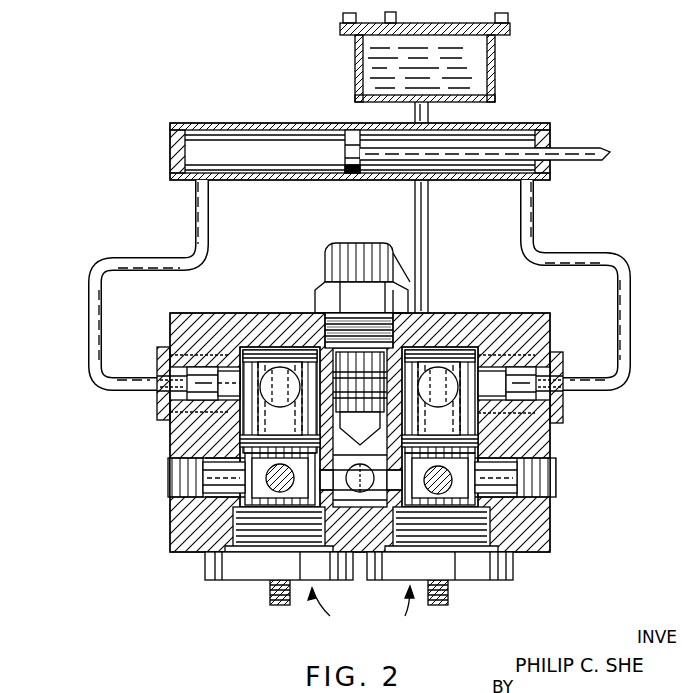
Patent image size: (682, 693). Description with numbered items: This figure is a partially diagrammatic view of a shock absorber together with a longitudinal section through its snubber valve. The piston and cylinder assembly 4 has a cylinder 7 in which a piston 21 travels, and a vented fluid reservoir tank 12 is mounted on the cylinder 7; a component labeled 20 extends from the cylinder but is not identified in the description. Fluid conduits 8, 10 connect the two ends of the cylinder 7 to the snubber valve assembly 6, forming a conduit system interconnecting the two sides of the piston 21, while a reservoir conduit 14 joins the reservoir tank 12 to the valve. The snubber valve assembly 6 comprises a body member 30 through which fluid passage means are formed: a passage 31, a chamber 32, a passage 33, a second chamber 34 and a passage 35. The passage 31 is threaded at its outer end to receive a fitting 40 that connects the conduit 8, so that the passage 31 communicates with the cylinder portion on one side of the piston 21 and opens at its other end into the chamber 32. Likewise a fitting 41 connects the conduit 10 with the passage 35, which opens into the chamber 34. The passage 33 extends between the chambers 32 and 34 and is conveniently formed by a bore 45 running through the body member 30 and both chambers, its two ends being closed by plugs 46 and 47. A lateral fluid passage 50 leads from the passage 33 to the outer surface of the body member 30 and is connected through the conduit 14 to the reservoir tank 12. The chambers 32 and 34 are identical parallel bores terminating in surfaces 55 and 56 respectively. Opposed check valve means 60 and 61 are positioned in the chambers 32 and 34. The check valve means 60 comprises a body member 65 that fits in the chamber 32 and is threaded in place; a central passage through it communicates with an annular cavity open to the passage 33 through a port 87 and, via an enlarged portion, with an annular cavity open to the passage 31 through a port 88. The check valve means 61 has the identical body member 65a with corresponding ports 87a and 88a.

The piston and cylinder assembly 4 is at (238, 101).
The snubber valve assembly 6 is at (169, 462).
The cylinder 7 is at (264, 124).
The fluid conduit 8 is at (88, 313).
The fluid conduit 10 is at (632, 320).
The vented fluid reservoir tank 12 is at (495, 70).
The reservoir conduit 14 is at (429, 222).
The piston rod 20 is at (594, 148).
The piston 21 is at (361, 178).
The body member 30 is at (178, 537).
The passage 31 is at (228, 345).
The chamber 32 is at (292, 580).
The passage 33 is at (358, 556).
The chamber 34 is at (418, 505).
The passage 35 is at (497, 375).
The fitting 40 is at (160, 347).
The fitting 41 is at (562, 352).
The bore 45 is at (206, 462).
The plug 46 is at (170, 478).
The plug 47 is at (557, 473).
The lateral fluid passage 50 is at (330, 556).
The surface 55 is at (285, 347).
The surface 56 is at (440, 350).
The check valve means 60 is at (328, 612).
The check valve means 61 is at (399, 611).
The body member 65 is at (240, 575).
The body member 65a is at (487, 578).
The port 87 is at (263, 483).
The port 87a is at (448, 490).
The port 88 is at (262, 395).
The port 88a is at (478, 395).